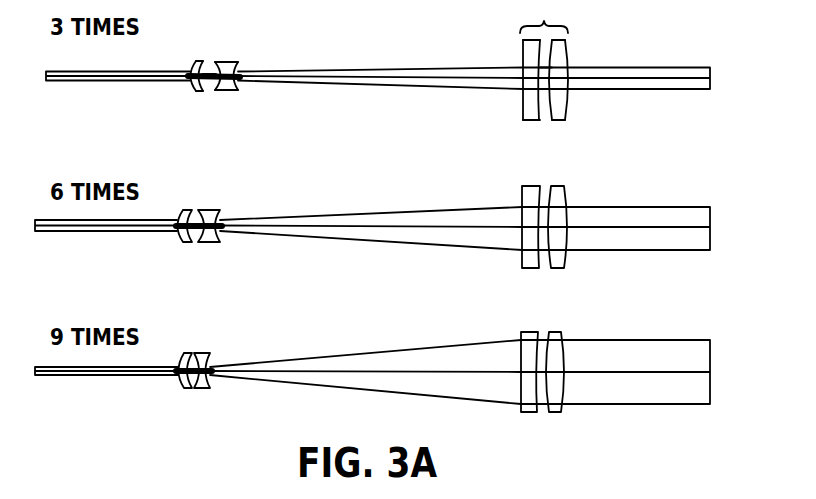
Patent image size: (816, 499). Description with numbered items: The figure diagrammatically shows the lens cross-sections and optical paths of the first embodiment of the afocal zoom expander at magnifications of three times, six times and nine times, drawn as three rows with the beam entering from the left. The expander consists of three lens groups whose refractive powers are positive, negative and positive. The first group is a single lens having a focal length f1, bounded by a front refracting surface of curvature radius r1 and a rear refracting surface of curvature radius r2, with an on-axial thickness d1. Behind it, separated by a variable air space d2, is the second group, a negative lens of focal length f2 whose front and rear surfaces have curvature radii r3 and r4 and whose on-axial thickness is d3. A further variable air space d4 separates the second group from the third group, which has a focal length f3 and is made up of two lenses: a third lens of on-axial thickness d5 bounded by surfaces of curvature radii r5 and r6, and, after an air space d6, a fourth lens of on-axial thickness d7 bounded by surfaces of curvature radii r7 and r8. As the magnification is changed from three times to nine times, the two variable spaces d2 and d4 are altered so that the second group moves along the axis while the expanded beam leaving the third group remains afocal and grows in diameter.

The focal length of the first lens group f1 is at (201, 22).
The focal length of the second lens group f2 is at (236, 22).
The focal length of the third lens group f3 is at (544, 17).
The on-axial thickness of the first lens d1 is at (190, 66).
The air space between the first and second lenses d2 is at (210, 70).
The on-axial thickness of the second lens d3 is at (240, 68).
The air space between the second lens and the third lens group d4 is at (380, 69).
The on-axial thickness of the third lens d5 is at (523, 68).
The air space between the third and fourth lenses d6 is at (552, 74).
The on-axial thickness of the fourth lens d7 is at (562, 78).
The curvature radius of the first refracting surface r1 is at (188, 88).
The curvature radius of the second refracting surface r2 is at (200, 92).
The curvature radius of the third refracting surface r3 is at (221, 91).
The curvature radius of the fourth refracting surface r4 is at (240, 88).
The curvature radius of the fifth refracting surface r5 is at (521, 105).
The curvature radius of the sixth refracting surface r6 is at (541, 118).
The curvature radius of the seventh refracting surface r7 is at (550, 118).
The curvature radius of the eighth refracting surface r8 is at (566, 107).